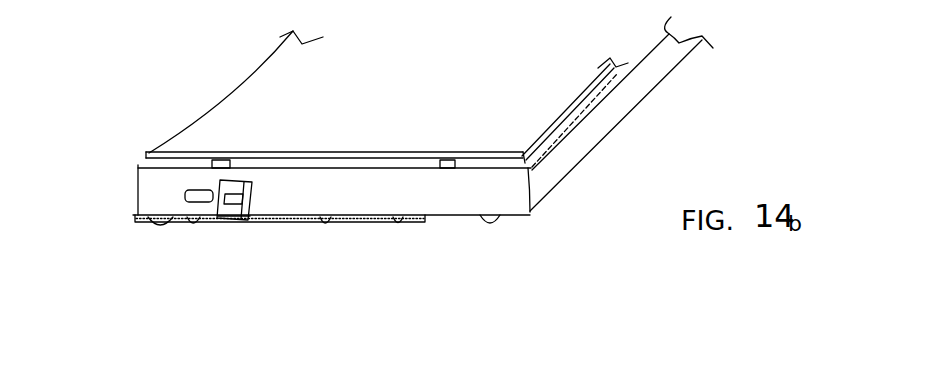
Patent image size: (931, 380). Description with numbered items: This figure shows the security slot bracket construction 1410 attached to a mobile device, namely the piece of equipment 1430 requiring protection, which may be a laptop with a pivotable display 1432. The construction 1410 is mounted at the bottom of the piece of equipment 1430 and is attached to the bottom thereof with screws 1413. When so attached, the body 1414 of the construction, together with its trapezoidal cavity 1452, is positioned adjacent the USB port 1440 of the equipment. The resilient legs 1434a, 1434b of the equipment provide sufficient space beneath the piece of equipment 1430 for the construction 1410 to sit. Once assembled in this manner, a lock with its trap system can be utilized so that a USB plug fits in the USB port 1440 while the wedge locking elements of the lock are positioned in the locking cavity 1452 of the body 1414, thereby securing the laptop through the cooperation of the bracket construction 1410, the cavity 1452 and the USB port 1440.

The construction 1410 is at (417, 223).
The screws 1413 is at (398, 225).
The body 1414 is at (247, 199).
The piece of equipment 1430 is at (652, 74).
The pivotable display 1432 is at (243, 95).
The resilient leg 1434a is at (495, 222).
The resilient leg 1434b is at (148, 220).
The USB port 1440 is at (185, 192).
The trapezoidal cavity 1452 is at (222, 214).